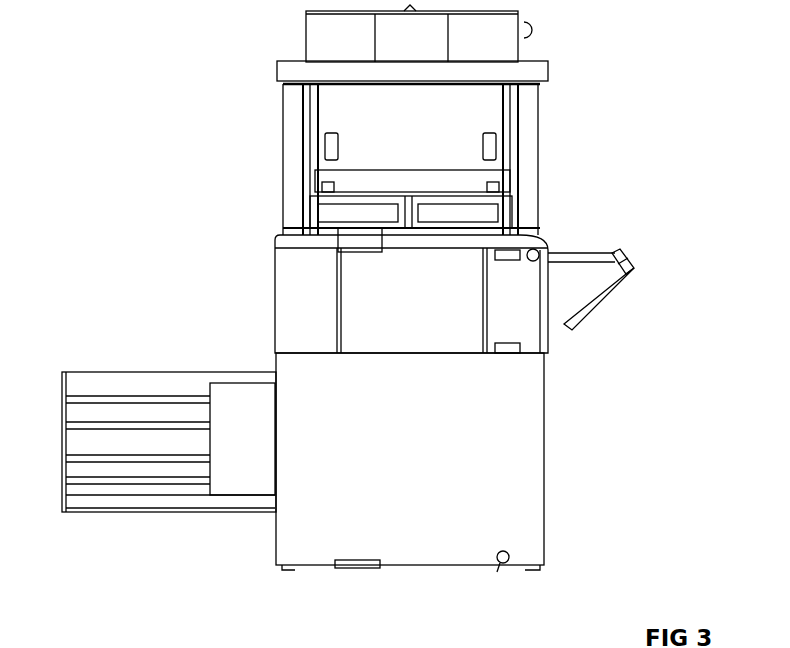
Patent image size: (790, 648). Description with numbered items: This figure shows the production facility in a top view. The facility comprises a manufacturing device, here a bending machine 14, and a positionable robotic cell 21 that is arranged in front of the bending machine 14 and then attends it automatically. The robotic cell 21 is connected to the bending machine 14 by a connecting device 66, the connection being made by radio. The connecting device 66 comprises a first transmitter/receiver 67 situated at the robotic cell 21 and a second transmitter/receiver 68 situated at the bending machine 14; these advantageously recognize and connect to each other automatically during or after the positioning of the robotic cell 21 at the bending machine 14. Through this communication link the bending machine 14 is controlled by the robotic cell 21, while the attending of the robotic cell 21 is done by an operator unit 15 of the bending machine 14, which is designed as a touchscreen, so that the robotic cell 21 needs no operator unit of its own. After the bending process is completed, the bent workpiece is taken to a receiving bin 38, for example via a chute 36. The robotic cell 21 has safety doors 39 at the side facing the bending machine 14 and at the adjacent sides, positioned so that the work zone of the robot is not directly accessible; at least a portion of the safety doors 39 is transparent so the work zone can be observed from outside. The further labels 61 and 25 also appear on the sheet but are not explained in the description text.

The upper processing unit 14 is at (523, 102).
The cabinet body 39 is at (277, 290).
The upper latch 68 is at (530, 235).
The lower latch 67 is at (530, 350).
The handle assembly 66 is at (566, 244).
The handle 15 is at (632, 281).
The lower cabinet 21 is at (517, 471).
The drawer unit 38 is at (120, 510).
The drawer side panel 36 is at (242, 420).
The base 61 is at (402, 635).
The base frame 25 is at (494, 644).